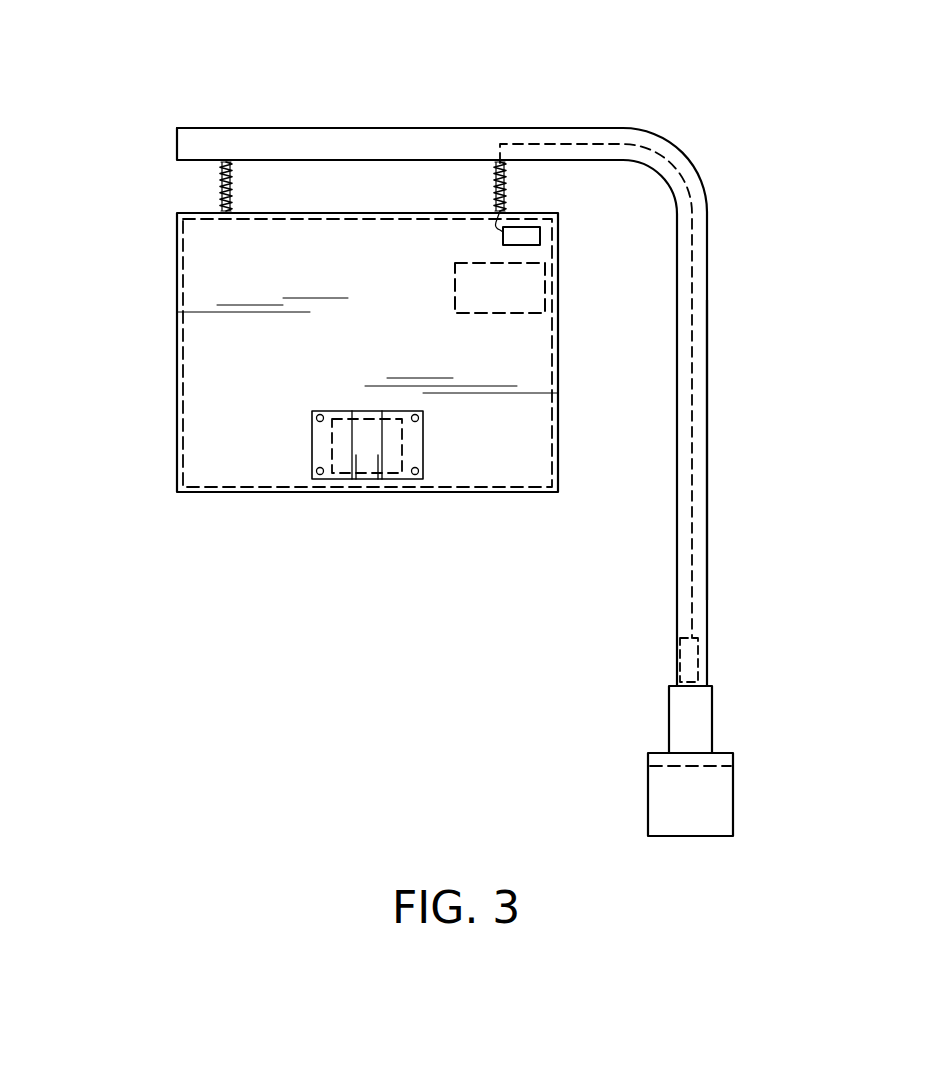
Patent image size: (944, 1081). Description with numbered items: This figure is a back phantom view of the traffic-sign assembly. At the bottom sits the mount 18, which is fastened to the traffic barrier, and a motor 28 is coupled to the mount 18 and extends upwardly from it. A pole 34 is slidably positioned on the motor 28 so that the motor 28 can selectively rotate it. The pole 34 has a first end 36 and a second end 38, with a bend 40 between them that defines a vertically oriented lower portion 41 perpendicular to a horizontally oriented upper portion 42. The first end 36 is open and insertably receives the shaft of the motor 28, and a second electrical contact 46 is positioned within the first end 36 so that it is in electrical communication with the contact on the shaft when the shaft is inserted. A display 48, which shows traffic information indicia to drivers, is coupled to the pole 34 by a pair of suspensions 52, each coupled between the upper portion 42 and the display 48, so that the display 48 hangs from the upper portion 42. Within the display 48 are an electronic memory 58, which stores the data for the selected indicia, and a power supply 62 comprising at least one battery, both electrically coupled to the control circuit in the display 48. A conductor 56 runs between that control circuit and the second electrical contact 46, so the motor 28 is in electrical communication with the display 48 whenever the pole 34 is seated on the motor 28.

The mount 18 is at (648, 755).
The motor 28 is at (712, 707).
The pole 34 is at (707, 292).
The first end 36 is at (690, 688).
The second end 38 is at (177, 135).
The bend 40 is at (697, 162).
The lower portion 41 is at (707, 438).
The upper portion 42 is at (390, 128).
The second electrical contact 46 is at (688, 640).
The display 48 is at (177, 300).
The suspensions 52 is at (232, 187).
The conductor 56 is at (691, 367).
The electronic memory 58 is at (498, 313).
The power supply 62 is at (390, 472).